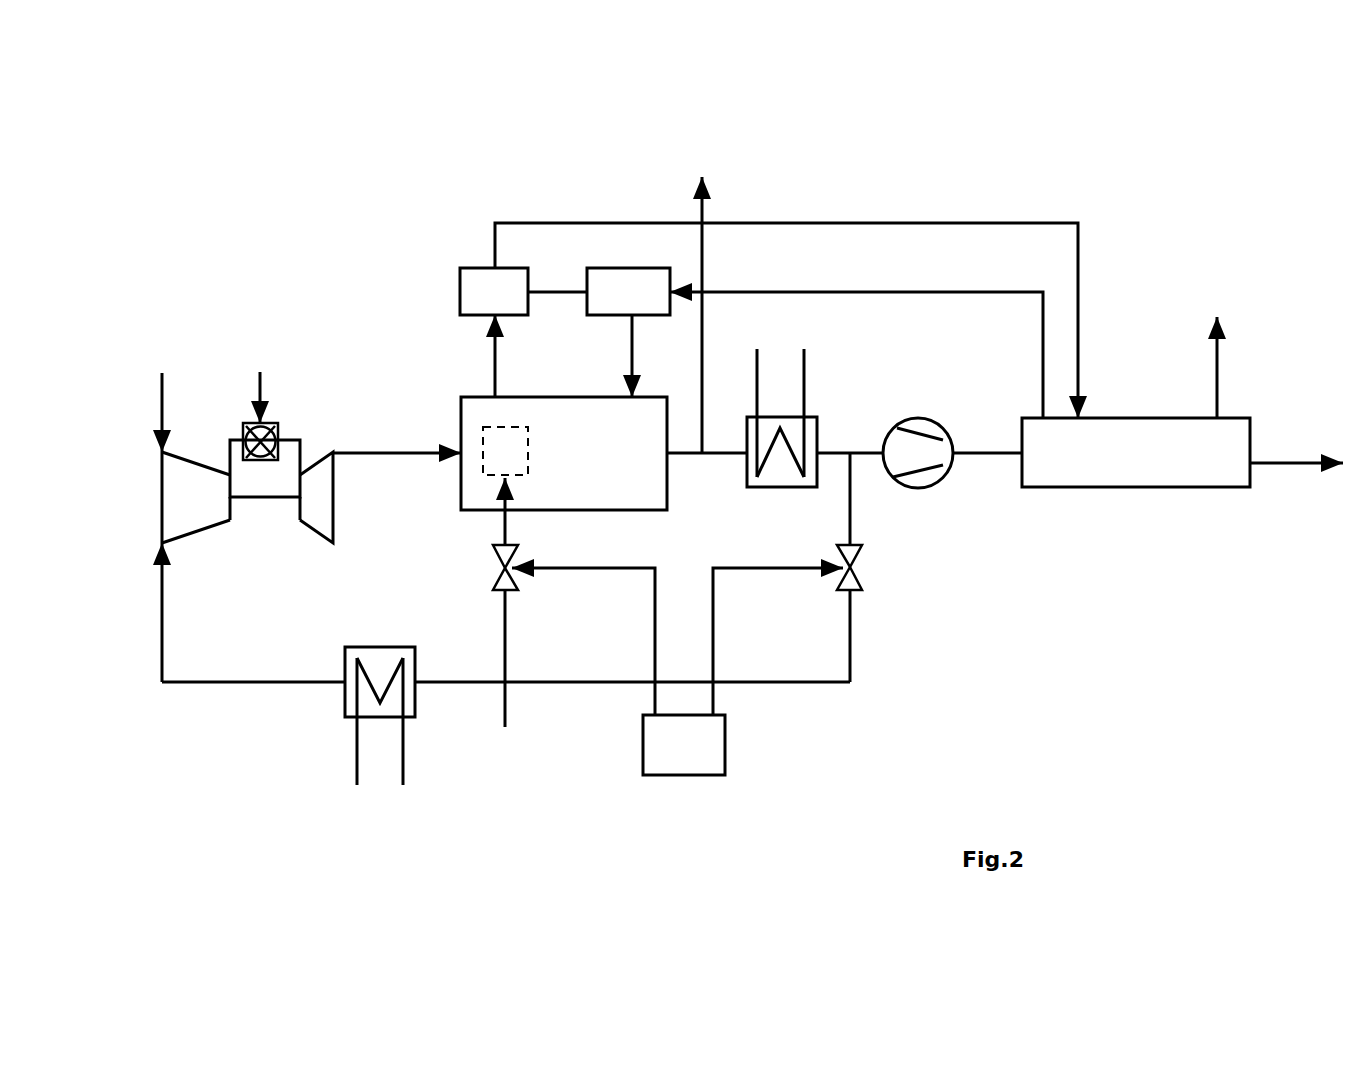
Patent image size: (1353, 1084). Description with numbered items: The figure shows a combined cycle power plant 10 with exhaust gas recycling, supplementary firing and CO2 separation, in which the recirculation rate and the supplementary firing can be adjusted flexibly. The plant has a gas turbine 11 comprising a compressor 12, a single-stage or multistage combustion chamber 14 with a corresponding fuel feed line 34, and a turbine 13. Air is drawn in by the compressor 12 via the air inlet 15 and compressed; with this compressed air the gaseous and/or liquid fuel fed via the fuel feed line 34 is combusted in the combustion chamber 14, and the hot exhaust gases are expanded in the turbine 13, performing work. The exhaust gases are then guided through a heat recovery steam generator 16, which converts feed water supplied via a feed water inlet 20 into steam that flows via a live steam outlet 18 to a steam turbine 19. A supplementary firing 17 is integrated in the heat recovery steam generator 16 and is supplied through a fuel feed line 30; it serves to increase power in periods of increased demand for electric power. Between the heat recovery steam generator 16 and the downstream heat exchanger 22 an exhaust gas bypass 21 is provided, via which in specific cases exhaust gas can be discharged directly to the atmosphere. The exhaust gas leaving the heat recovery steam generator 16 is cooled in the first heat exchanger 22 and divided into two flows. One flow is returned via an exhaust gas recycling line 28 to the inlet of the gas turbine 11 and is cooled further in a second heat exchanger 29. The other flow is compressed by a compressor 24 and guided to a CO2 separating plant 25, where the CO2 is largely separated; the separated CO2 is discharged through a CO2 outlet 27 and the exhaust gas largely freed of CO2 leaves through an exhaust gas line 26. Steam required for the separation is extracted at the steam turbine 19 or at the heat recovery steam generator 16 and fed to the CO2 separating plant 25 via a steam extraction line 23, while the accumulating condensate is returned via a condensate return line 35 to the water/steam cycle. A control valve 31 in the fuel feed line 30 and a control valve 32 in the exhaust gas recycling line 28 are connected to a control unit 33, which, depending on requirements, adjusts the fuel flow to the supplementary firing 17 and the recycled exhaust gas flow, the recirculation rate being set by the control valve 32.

The combined cycle power plant 10 is at (1021, 647).
The gas turbine 11 is at (246, 571).
The compressor 12 is at (173, 497).
The turbine 13 is at (322, 510).
The combustion chamber 14 is at (277, 423).
The air inlet 15 is at (158, 393).
The heat recovery steam generator 16 is at (586, 468).
The supplementary firing 17 is at (460, 430).
The live steam outlet 18 is at (492, 360).
The steam turbine 19 is at (470, 290).
The feed water inlet 20 is at (630, 360).
The exhaust gas bypass 21 is at (700, 255).
The heat exchanger 22 is at (795, 428).
The steam extraction line 23 is at (815, 222).
The compressor 24 is at (930, 475).
The CO2 separating plant 25 is at (1135, 463).
The exhaust gas line 26 is at (1218, 357).
The CO2 outlet 27 is at (1285, 467).
The exhaust gas recycling line 28 is at (803, 683).
The heat exchanger 29 is at (342, 705).
The fuel feed line 30 is at (503, 640).
The control valve 31 is at (498, 577).
The control valve 32 is at (860, 588).
The control unit 33 is at (672, 775).
The fuel feed line 34 is at (258, 381).
The condensate return line 35 is at (953, 292).